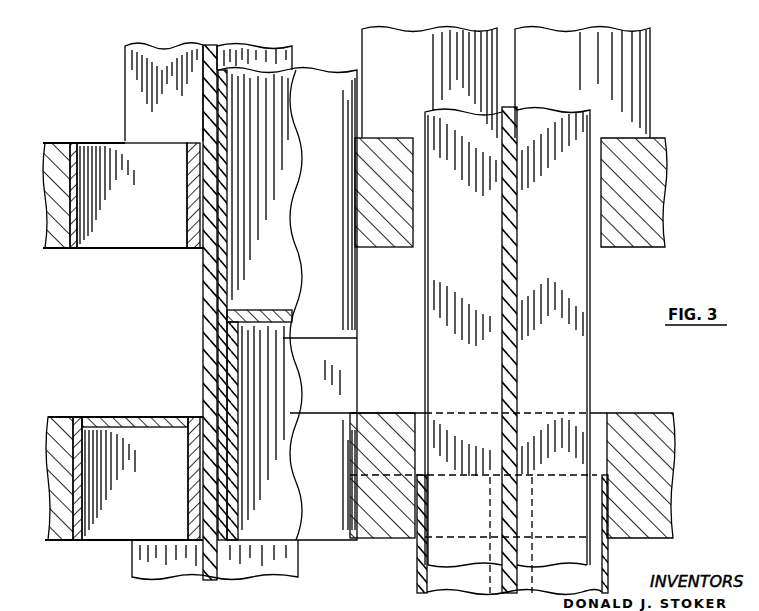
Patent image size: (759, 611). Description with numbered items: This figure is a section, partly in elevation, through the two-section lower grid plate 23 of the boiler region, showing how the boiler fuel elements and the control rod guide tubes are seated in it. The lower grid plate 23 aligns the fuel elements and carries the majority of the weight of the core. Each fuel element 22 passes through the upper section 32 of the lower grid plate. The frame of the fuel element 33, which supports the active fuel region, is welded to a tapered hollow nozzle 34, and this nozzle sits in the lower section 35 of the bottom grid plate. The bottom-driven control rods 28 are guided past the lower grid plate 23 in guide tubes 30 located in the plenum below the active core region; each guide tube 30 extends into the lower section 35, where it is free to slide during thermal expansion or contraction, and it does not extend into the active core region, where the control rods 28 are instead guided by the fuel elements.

The fuel element 22 is at (268, 272).
The lower grid plate 23 is at (158, 435).
The control rod 28 is at (138, 112).
The guide tube 30 is at (608, 557).
The upper section 32 is at (69, 247).
The frame of the fuel element 33 is at (227, 310).
The tapered hollow nozzle 34 is at (232, 360).
The lower section 35 is at (137, 447).